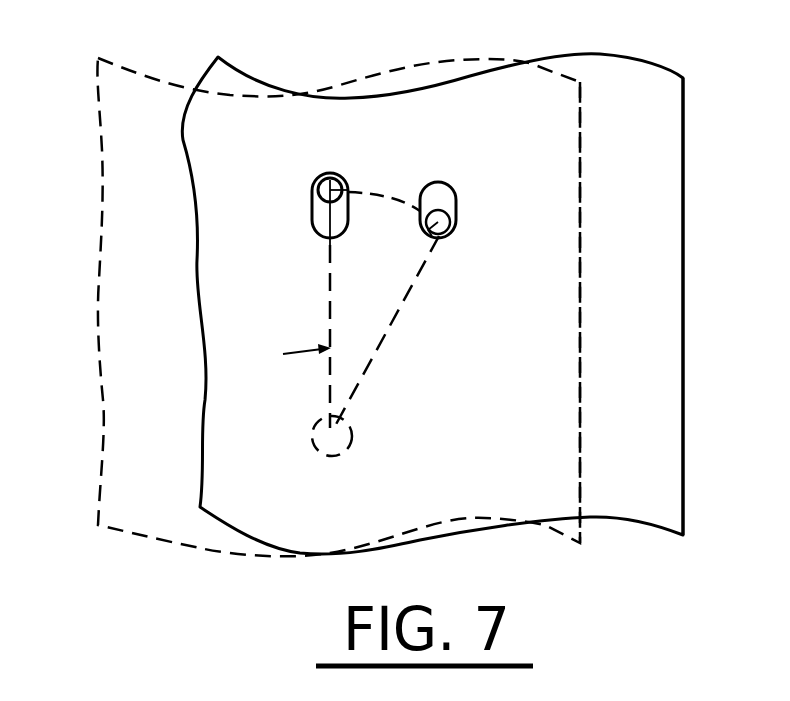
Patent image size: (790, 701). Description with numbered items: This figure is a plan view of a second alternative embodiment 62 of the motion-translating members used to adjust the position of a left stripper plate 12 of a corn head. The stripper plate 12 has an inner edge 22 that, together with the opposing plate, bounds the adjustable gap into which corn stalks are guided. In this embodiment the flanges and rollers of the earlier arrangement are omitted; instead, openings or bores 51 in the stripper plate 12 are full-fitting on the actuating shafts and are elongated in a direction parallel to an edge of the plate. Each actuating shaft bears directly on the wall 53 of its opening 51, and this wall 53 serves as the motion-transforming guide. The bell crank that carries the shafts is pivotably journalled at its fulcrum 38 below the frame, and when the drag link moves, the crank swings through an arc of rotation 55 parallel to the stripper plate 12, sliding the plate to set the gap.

The left stripper plate 12 is at (643, 316).
The left inner edge 22 is at (582, 153).
The fulcrum 38 is at (318, 440).
The opening or bore 51 is at (325, 237).
The wall of stripper plate opening 53 is at (315, 210).
The arc of rotation 55 is at (380, 363).
The second alternative embodiment of motion-translating members 62 is at (82, 258).